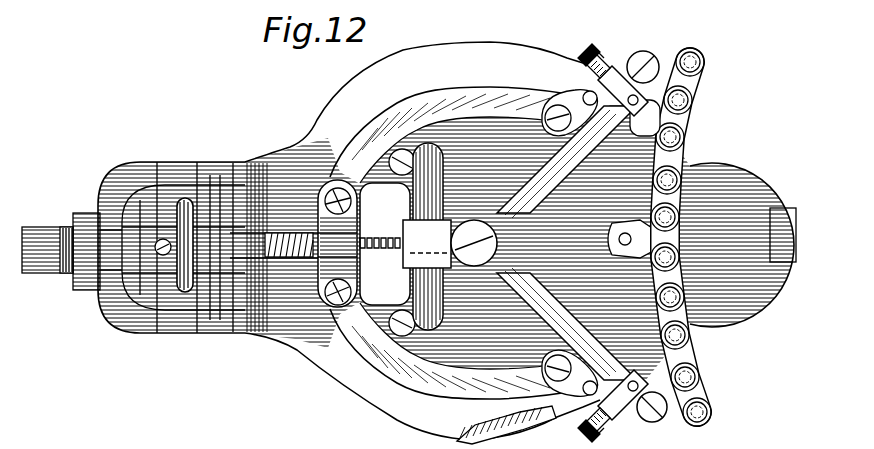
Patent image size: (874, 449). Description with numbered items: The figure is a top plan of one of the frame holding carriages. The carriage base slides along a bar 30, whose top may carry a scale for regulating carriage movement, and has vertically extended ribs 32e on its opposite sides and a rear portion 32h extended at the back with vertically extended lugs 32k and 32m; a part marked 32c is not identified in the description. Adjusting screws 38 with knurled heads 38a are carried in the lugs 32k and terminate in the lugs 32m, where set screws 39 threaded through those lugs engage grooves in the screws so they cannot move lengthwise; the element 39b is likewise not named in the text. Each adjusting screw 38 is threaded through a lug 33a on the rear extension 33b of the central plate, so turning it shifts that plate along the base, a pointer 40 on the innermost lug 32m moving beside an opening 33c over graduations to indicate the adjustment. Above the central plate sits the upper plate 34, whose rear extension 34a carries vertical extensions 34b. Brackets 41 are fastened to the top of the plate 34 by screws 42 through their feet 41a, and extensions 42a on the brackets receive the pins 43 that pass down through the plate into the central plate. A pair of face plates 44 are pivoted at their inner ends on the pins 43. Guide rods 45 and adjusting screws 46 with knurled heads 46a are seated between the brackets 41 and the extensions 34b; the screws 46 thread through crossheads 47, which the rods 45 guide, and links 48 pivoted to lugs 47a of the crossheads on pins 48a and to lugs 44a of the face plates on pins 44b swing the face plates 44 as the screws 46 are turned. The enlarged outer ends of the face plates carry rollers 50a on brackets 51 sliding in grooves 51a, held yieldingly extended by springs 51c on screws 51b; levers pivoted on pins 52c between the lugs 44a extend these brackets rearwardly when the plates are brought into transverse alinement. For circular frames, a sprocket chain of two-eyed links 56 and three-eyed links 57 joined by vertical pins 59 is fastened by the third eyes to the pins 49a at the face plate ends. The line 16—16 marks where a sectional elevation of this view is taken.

The pivot pin 16 is at (638, 372).
The bar 30 is at (785, 212).
The housing wall 32c is at (125, 318).
The vertically extended rib 32e is at (160, 166).
The rear portion 32h is at (112, 300).
The vertically extended lug 32k is at (75, 278).
The vertically extended lug 32m is at (165, 205).
The lug 33a is at (105, 212).
The rear extension 33b is at (205, 168).
The opening 33c is at (155, 215).
The upper plate 34 is at (422, 241).
The rear extension 34a is at (258, 325).
The vertical extension 34b is at (218, 325).
The adjusting screw 38 is at (95, 283).
The knurled head 38a is at (70, 228).
The set screw 39 is at (185, 205).
The collar flange 39b is at (188, 298).
The pointer 40 is at (168, 287).
The bracket 41 is at (447, 212).
The foot 41a is at (388, 160).
The screw 42 is at (385, 152).
The extension 42a is at (462, 212).
The pin 43 is at (530, 242).
The face plate 44 is at (578, 195).
The lug 44a is at (548, 135).
The pin 44b is at (543, 122).
The guide rod 45 is at (385, 222).
The adjusting screw 46 is at (275, 212).
The knurled head 46a is at (188, 206).
The crosshead 47 is at (300, 232).
The lug 47a is at (324, 202).
The link 48 is at (487, 100).
The pin 48a is at (328, 192).
The pin 49a is at (648, 52).
The roller 50a is at (704, 348).
The bracket 51 is at (612, 60).
The groove 51a is at (625, 345).
The screw 51b is at (585, 53).
The spring 51c is at (598, 45).
The pin 52c is at (585, 95).
The link 56 is at (692, 110).
The link 57 is at (700, 72).
The vertical pin 59 is at (678, 137).